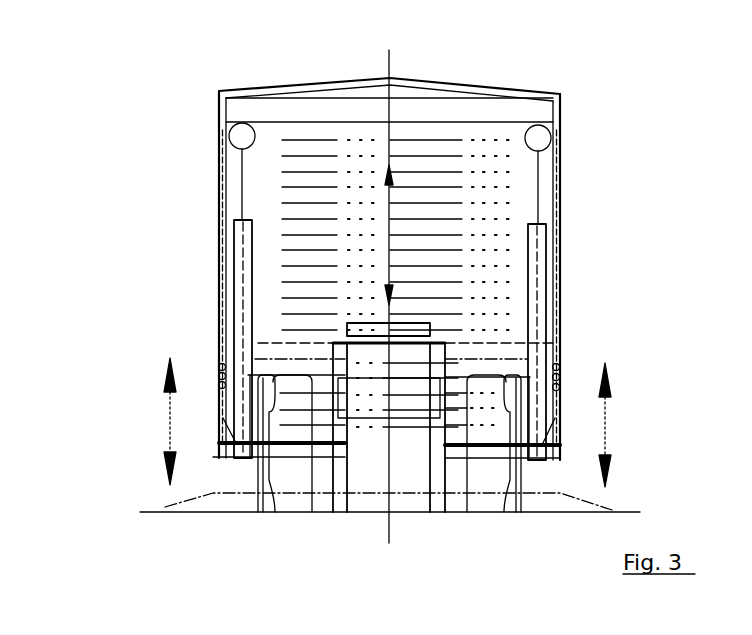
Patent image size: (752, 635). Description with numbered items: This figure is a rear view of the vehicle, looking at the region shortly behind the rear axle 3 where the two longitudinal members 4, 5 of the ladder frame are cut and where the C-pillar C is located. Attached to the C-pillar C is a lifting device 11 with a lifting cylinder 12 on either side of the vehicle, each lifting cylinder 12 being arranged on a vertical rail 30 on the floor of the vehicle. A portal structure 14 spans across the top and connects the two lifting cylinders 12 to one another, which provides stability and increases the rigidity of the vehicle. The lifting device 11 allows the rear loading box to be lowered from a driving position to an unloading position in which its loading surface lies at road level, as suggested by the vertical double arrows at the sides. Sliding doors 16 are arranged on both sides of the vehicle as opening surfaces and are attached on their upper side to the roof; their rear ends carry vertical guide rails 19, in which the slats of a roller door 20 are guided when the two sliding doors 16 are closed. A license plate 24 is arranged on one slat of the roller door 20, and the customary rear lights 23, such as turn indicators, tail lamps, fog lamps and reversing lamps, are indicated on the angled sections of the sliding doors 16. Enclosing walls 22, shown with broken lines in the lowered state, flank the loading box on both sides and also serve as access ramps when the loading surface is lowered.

The rear axle 3 is at (437, 420).
The longitudinal member 4 is at (338, 355).
The longitudinal member 5 is at (440, 355).
The lifting device 11 is at (220, 293).
The lifting cylinder 12 is at (240, 395).
The portal structure 14 is at (453, 112).
The sliding door 16 is at (232, 248).
The guide rail 19 is at (220, 177).
The roller door 20 is at (448, 150).
The enclosing wall 22 is at (222, 460).
The rear lights 23 is at (219, 367).
The license plate 24 is at (432, 326).
The vertical rail 30 is at (220, 267).
The C-pillar C is at (543, 173).